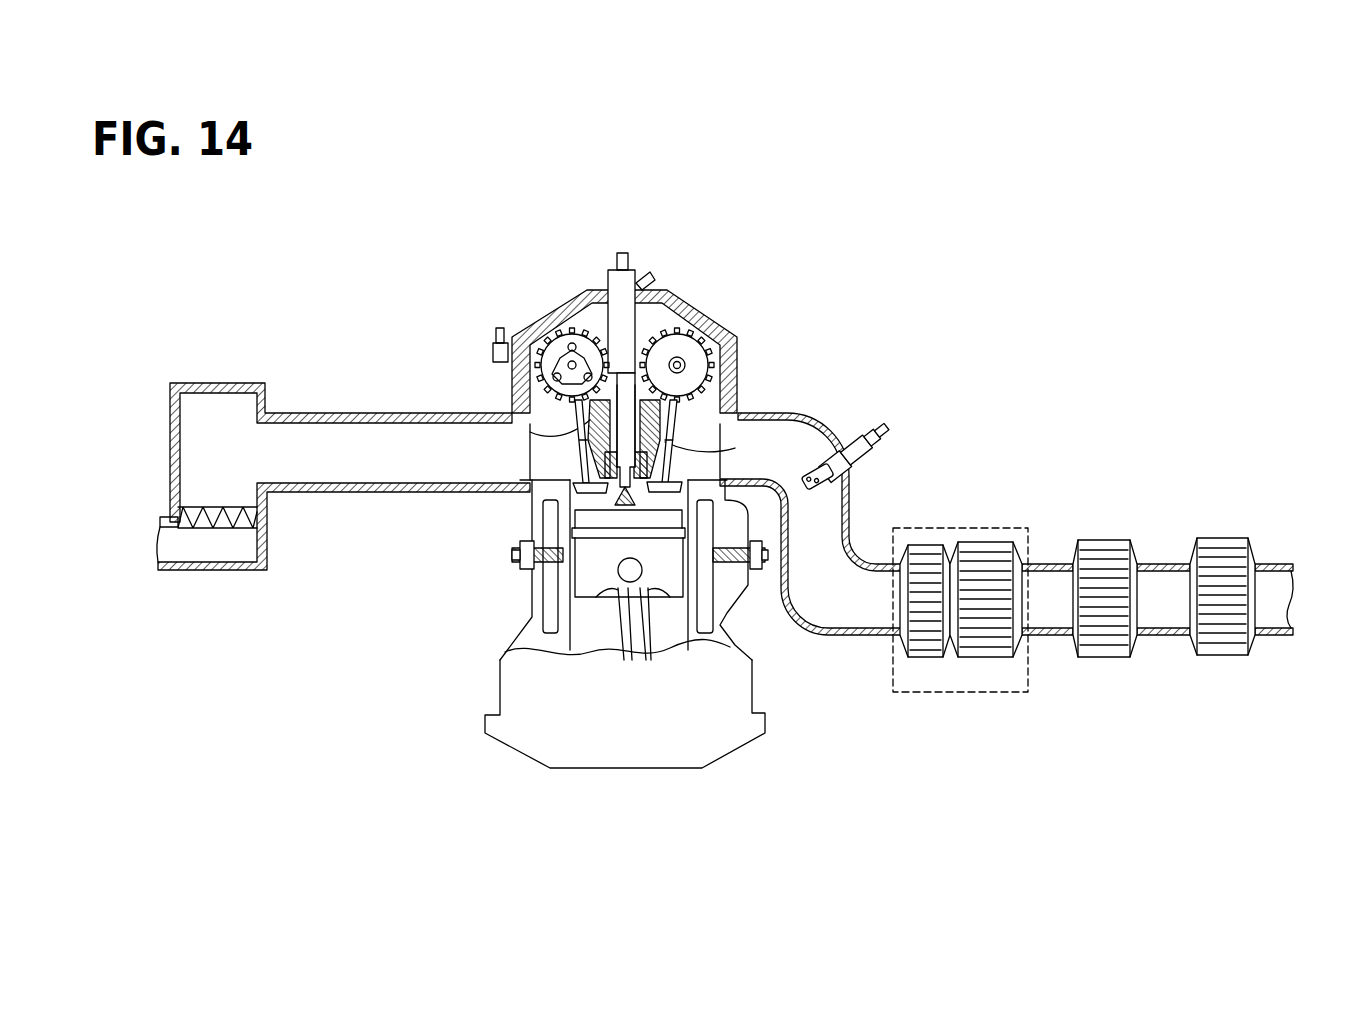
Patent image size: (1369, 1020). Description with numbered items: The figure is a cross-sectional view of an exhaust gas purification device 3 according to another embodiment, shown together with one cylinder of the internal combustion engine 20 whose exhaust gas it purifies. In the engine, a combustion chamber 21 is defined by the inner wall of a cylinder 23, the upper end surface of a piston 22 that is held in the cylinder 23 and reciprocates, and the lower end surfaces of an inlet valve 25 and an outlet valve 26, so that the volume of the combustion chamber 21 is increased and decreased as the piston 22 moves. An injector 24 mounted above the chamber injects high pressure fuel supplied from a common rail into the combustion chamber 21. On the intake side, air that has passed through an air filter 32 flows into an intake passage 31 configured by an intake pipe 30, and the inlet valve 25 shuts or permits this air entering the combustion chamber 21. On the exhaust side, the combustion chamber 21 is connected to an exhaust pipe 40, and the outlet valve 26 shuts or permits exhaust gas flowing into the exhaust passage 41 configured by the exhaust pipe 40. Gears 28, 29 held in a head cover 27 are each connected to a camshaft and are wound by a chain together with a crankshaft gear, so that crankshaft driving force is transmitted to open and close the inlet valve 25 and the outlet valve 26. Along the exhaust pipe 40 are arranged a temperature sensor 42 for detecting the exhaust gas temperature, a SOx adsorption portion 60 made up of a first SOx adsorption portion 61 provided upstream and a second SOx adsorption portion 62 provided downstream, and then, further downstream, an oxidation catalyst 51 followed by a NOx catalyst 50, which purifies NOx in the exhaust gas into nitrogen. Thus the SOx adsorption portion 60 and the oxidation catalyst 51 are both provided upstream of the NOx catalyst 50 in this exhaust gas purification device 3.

The exhaust gas purification device 3 is at (1060, 495).
The internal combustion engine 20 is at (731, 754).
The combustion chamber 21 is at (560, 508).
The piston 22 is at (573, 597).
The cylinder 23 is at (518, 637).
The injector 24 is at (608, 284).
The inlet valve 25 is at (512, 417).
The outlet valve 26 is at (715, 455).
The head cover 27 is at (687, 302).
The gear 28 is at (527, 325).
The gear 29 is at (713, 323).
The intake pipe 30 is at (382, 410).
The intake passage 31 is at (368, 457).
The air filter 32 is at (200, 507).
The exhaust pipe 40 is at (813, 428).
The exhaust passage 41 is at (827, 543).
The temperature sensor 42 is at (888, 434).
The NOx catalyst 50 is at (1223, 655).
The oxidation catalyst 51 is at (1107, 657).
The SOx adsorption portion 60 is at (992, 528).
The first SOx adsorption portion 61 is at (918, 658).
The second SOx adsorption portion 62 is at (983, 658).